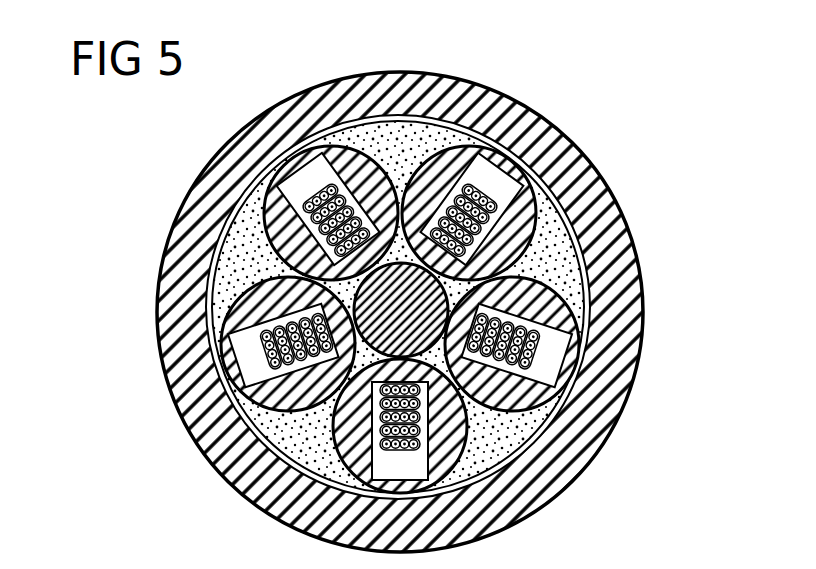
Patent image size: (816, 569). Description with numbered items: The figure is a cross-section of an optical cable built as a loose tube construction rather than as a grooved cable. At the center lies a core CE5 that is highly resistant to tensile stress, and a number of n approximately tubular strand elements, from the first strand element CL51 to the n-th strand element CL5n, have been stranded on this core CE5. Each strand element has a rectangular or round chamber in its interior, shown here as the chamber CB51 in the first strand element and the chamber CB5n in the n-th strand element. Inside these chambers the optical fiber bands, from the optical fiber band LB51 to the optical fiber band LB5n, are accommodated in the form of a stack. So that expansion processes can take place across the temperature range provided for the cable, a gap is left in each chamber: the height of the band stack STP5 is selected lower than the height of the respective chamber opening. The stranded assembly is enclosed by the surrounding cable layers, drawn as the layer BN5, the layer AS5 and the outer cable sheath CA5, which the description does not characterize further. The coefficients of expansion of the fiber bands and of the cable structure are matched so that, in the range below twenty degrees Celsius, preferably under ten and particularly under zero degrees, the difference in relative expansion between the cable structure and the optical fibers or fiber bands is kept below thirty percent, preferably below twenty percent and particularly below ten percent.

The cable sheath / outer jacket CA5 is at (558, 102).
The band stack STP5 is at (238, 135).
The armor sheath AS5 is at (595, 187).
The binding / bedding layer BN5 is at (590, 267).
The optical fiber band LB51 is at (321, 152).
The strand element CL51 is at (382, 163).
The chamber CB51 is at (326, 178).
The optical fiber band LB5n is at (225, 370).
The strand element CL5n is at (262, 448).
The chamber CB5n is at (240, 388).
The core CE5 is at (252, 362).